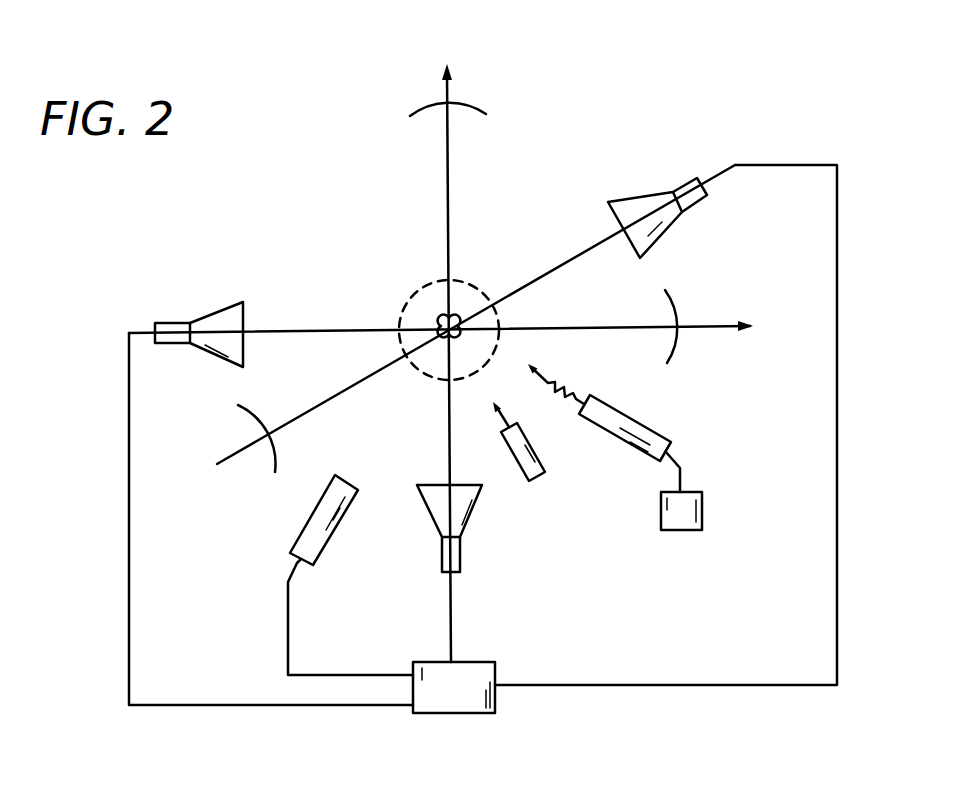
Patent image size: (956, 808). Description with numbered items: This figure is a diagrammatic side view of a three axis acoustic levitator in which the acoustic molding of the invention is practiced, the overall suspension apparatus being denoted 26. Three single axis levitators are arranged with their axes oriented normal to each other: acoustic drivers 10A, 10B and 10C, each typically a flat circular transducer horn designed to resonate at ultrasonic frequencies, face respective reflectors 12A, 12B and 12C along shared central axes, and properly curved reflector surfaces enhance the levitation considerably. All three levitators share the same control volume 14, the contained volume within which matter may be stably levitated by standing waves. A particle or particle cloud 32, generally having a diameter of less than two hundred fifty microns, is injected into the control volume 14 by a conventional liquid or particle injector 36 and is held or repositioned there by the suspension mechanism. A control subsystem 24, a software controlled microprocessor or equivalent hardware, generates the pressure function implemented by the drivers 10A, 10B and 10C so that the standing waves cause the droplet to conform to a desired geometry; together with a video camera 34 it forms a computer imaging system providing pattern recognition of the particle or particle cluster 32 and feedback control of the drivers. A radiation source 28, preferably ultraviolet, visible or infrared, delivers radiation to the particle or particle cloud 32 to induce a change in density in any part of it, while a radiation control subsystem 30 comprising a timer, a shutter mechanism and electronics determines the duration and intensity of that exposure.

The acoustic driver 10A is at (220, 303).
The acoustic driver 10B is at (686, 182).
The acoustic driver 10C is at (470, 518).
The reflector 12A is at (677, 303).
The reflector 12B is at (252, 461).
The reflector 12C is at (477, 102).
The control volume 14 is at (408, 300).
The control subsystem 24 is at (495, 663).
The suspension apparatus 26 is at (776, 150).
The radiation source 28 is at (650, 430).
The radiation control subsystem 30 is at (702, 506).
The particle or particle cloud 32 is at (480, 290).
The video camera 34 is at (337, 523).
The liquid or particle injector 36 is at (547, 457).